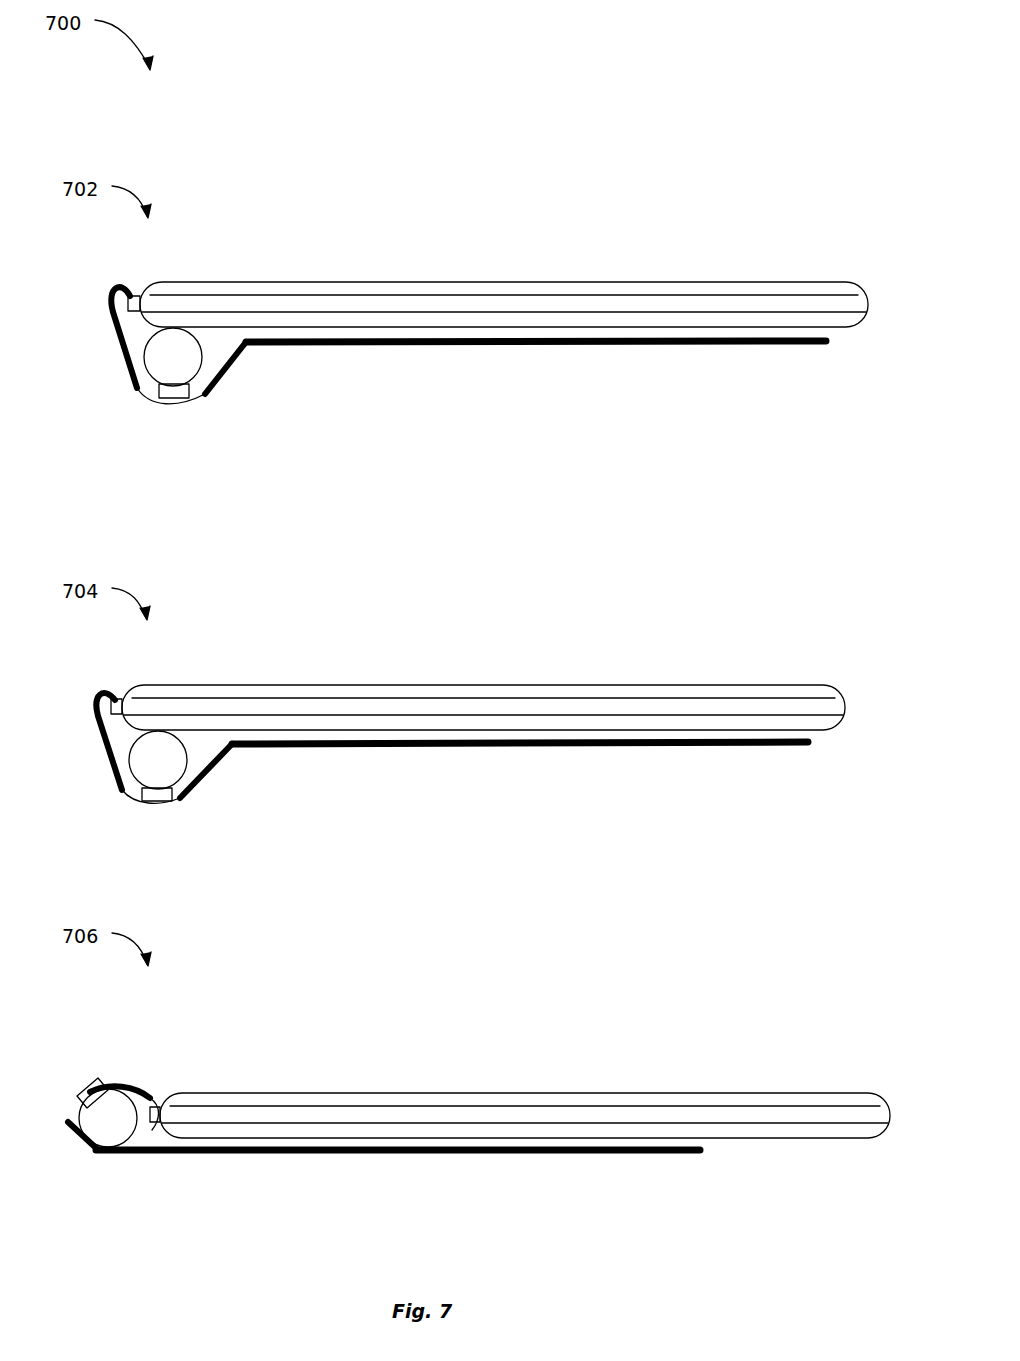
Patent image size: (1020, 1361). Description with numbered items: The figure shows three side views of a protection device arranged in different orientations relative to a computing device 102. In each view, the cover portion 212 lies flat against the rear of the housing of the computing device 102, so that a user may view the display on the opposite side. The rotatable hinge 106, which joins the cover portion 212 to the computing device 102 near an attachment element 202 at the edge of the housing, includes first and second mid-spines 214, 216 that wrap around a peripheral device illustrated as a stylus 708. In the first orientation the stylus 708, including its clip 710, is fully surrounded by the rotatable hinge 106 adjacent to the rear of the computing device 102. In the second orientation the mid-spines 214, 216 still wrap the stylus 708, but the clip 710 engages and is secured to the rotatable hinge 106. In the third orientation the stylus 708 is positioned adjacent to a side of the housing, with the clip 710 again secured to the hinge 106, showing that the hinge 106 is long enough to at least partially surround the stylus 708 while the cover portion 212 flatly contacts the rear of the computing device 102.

The computing device 102 is at (446, 272).
The rotatable hinge 106 is at (270, 428).
The attachment member 202 is at (125, 342).
The cover portion 212 is at (424, 352).
The first mid-spine 214 is at (124, 382).
The second mid-spine 216 is at (232, 362).
The stylus 708 is at (140, 737).
The clip 710 is at (178, 400).